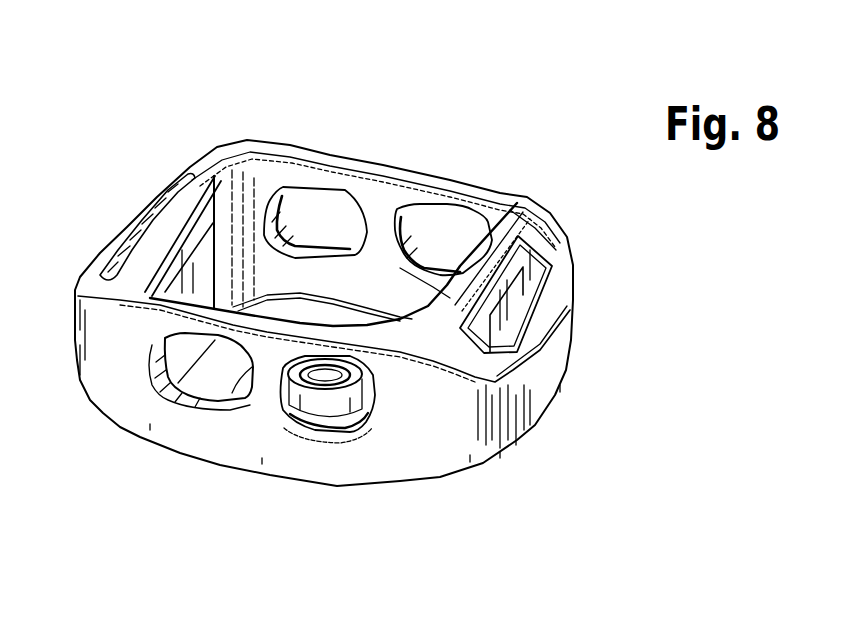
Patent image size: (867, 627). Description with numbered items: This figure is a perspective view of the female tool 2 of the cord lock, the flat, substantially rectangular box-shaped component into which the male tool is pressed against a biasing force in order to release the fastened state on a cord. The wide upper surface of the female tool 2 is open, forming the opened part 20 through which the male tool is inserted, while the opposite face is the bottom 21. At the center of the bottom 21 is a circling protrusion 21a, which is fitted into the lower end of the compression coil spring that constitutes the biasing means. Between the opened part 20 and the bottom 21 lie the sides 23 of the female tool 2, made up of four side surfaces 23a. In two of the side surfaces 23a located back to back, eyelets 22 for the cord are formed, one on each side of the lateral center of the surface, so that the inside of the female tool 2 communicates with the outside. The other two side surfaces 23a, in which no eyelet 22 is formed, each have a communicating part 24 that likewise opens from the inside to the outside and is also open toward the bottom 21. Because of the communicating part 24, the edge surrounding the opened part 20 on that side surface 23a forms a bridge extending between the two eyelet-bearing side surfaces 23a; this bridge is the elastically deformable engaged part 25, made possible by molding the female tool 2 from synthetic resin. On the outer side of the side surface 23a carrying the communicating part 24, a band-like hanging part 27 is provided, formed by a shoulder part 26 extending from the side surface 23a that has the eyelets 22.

The female tool 2 is at (407, 470).
The opened part 20 is at (396, 186).
The bottom 21 is at (220, 383).
The circling protrusion 21a is at (323, 400).
The eyelet 22 is at (300, 200).
The side 23 is at (421, 314).
The side surface 23a is at (217, 207).
The communicating part 24 is at (197, 273).
The engaged part 25 is at (155, 242).
The shoulder part 26 is at (480, 450).
The hanging part 27 is at (543, 387).